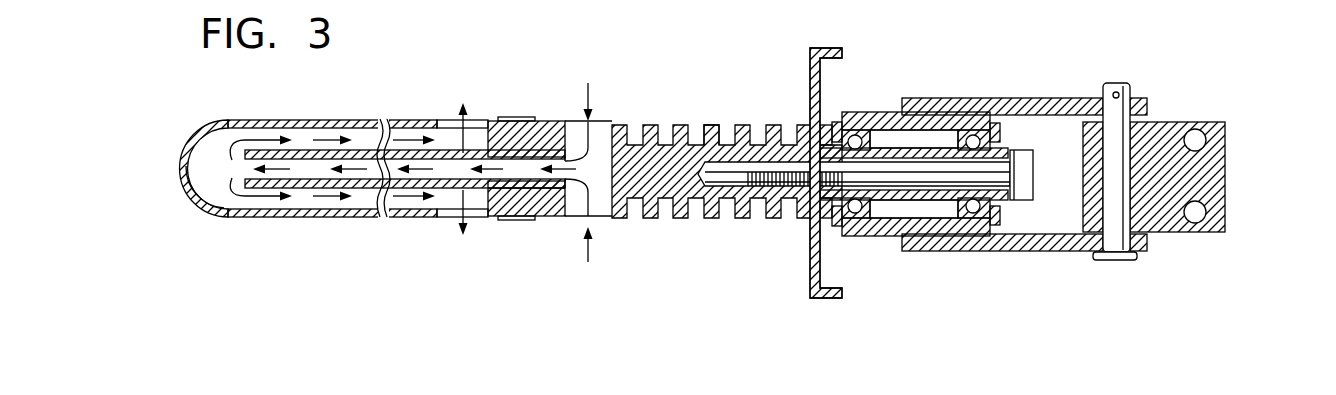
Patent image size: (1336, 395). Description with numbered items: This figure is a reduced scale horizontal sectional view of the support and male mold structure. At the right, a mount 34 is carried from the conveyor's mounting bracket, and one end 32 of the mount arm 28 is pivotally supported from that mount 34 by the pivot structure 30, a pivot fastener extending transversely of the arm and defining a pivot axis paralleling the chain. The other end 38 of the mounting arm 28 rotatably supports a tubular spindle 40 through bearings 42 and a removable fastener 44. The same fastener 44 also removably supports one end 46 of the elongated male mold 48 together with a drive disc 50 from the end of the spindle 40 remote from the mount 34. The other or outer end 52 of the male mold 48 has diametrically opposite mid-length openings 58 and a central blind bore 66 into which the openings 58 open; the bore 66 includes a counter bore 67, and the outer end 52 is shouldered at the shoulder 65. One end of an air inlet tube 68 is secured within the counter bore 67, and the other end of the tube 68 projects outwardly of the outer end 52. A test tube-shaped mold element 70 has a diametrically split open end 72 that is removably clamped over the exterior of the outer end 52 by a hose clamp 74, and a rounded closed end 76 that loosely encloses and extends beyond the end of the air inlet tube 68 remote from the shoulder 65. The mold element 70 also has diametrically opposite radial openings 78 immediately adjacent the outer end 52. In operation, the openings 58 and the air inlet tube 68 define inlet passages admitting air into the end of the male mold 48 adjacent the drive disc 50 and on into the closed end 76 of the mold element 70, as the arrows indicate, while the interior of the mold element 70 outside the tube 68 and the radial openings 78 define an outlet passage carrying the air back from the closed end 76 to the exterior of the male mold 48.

The mount arm 28 is at (975, 98).
The pivot structure 30 is at (1117, 262).
The one end of the arm 32 is at (1057, 252).
The mount 34 is at (1223, 167).
The other end of the mounting arm 38 is at (920, 254).
The tubular spindle 40 is at (915, 148).
The bearings 42 is at (856, 134).
The removable fastener 44 is at (1028, 168).
The one end of the male mold 46 is at (713, 125).
The male mold 48 is at (621, 124).
The drive disc 50 is at (808, 281).
The outer end of the male mold 52 is at (558, 220).
The mid-length openings 58 is at (575, 121).
The shoulder 65 is at (553, 121).
The central blind bore 66 is at (543, 216).
The counter bore 67 is at (517, 199).
The air inlet tube 68 is at (357, 187).
The mold element 70 is at (242, 218).
The split open end 72 is at (493, 121).
The hose clamp 74 is at (500, 221).
The rounded closed end 76 is at (186, 147).
The radial openings 78 is at (447, 140).